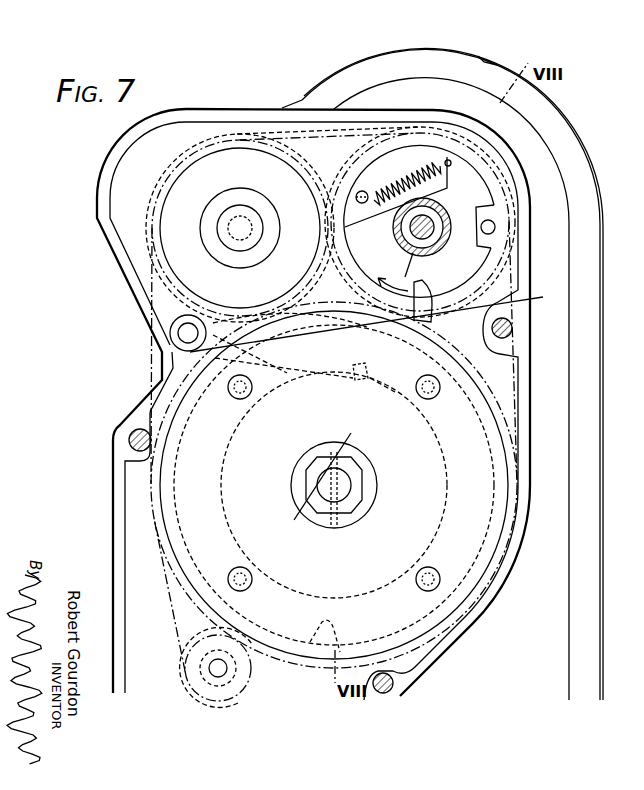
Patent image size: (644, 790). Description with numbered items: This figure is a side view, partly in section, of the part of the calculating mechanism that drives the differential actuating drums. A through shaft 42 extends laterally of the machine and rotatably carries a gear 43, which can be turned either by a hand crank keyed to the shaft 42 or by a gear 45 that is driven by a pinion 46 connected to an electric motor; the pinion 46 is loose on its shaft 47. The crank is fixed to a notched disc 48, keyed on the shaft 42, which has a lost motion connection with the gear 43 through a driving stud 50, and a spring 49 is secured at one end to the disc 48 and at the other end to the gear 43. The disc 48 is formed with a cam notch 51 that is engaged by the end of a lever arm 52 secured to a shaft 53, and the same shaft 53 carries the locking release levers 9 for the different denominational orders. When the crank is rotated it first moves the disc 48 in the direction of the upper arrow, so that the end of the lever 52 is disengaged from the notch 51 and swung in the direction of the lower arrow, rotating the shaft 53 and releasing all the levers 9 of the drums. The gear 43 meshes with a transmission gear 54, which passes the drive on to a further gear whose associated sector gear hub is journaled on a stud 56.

The lever 9 is at (283, 377).
The through shaft 42 is at (402, 229).
The gear 43 is at (377, 254).
The gear 45 is at (505, 402).
The pinion 46 is at (182, 645).
The shaft 47 is at (212, 668).
The notched disc 48 is at (473, 258).
The spring 49 is at (377, 183).
The driving stud 50 is at (495, 224).
The cam notch 51 is at (432, 294).
The lever arm 52 is at (360, 322).
The shaft 53 is at (170, 337).
The transmission gear 54 is at (252, 133).
The stud 56 is at (349, 490).